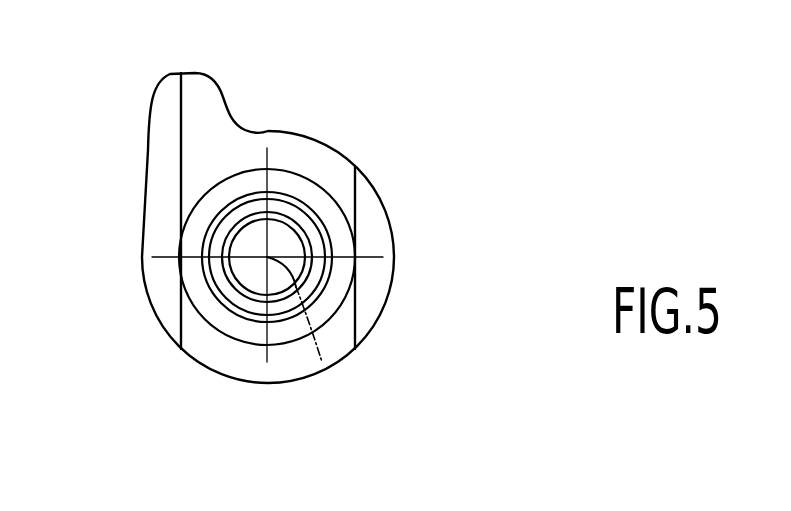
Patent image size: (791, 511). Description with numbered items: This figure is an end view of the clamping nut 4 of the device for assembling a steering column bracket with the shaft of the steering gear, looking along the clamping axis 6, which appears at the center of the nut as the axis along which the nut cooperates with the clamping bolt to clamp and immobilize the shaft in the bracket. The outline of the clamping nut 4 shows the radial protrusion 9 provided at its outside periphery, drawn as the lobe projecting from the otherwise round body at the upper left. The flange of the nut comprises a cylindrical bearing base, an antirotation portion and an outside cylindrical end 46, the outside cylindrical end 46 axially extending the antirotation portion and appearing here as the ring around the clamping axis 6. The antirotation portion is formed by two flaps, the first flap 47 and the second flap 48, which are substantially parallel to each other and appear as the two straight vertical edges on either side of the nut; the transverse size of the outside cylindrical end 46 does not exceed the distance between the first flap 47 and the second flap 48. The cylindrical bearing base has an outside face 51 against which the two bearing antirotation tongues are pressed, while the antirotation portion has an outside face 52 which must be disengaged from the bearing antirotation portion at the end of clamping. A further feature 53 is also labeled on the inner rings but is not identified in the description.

The clamping nut 4 is at (324, 129).
The clamping axis 6 is at (322, 362).
The radial protrusion 9 is at (188, 86).
The outside cylindrical end 46 is at (285, 330).
The first flap 47 is at (361, 316).
The second flap 48 is at (176, 303).
The outside face 51 is at (163, 152).
The outside face 52 is at (225, 153).
The inner rings 53 is at (233, 294).